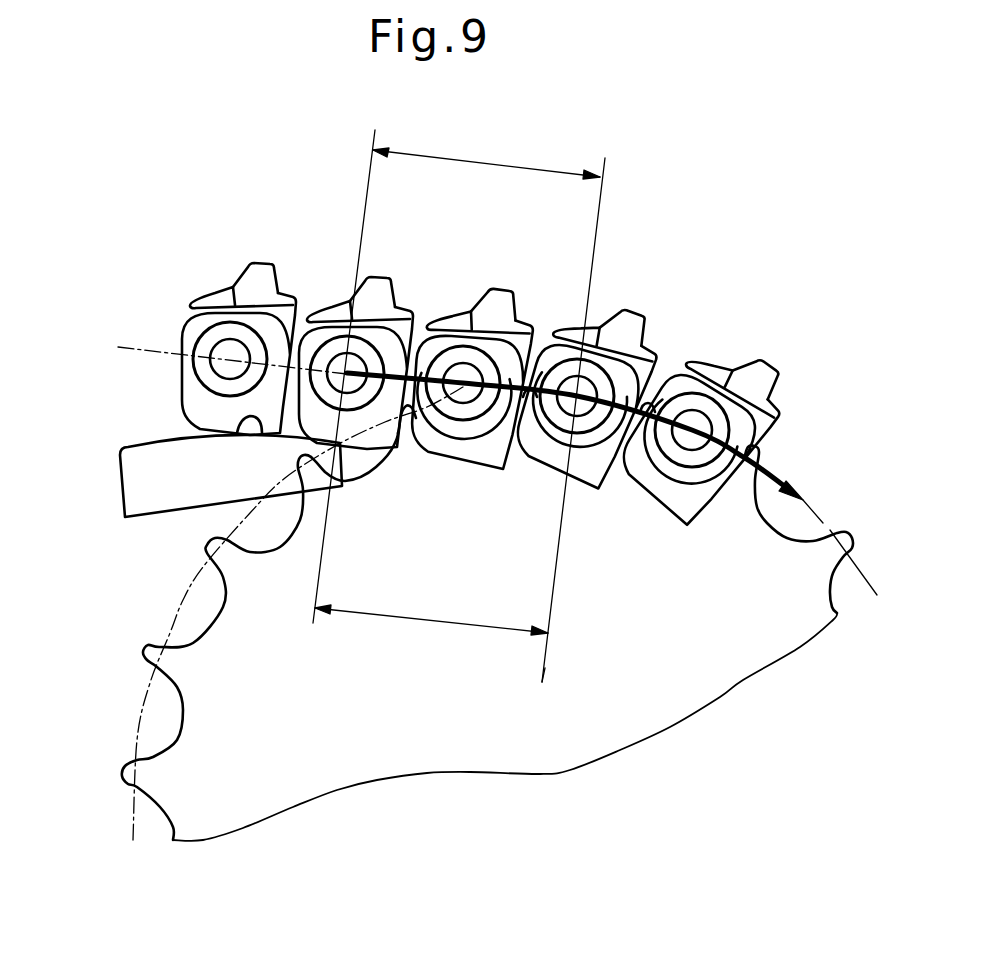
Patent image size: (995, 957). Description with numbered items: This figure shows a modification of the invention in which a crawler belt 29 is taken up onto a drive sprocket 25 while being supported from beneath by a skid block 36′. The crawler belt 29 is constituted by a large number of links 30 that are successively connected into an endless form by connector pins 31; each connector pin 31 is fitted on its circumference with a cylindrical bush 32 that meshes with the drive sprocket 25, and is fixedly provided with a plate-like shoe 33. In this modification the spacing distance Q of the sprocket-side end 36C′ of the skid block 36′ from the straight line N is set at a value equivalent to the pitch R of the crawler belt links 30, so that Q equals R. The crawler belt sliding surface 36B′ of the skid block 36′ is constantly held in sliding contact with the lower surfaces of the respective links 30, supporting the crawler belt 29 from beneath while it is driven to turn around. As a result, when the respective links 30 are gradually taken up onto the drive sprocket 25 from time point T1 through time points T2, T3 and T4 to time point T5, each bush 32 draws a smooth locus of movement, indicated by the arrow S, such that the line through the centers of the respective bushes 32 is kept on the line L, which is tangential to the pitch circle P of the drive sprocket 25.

The drive sprocket 25 is at (337, 778).
The crawler belt 29 is at (453, 351).
The link 30 is at (220, 407).
The connector pin 31 is at (210, 364).
The cylindrical bush 32 is at (232, 333).
The plate-like shoe 33 is at (527, 283).
The skid block 36′ is at (253, 499).
The crawler belt sliding surface 36B′ is at (248, 422).
The sprocket-side end 36C′ is at (347, 460).
The time point T1 is at (266, 264).
The time point T2 is at (381, 275).
The time point T3 is at (500, 292).
The time point T4 is at (640, 313).
The time point T5 is at (774, 358).
The line L is at (118, 347).
The pitch circle P is at (137, 715).
The arrow S is at (780, 478).
The pitch R is at (459, 403).
The spacing distance Q is at (431, 610).
The straight line N is at (545, 668).